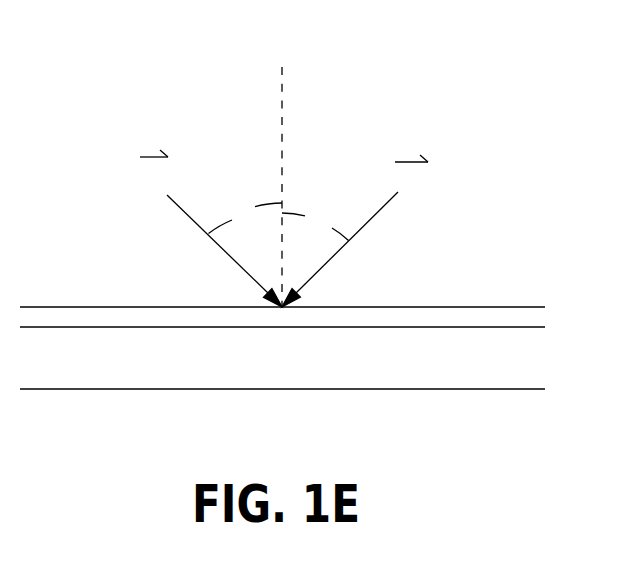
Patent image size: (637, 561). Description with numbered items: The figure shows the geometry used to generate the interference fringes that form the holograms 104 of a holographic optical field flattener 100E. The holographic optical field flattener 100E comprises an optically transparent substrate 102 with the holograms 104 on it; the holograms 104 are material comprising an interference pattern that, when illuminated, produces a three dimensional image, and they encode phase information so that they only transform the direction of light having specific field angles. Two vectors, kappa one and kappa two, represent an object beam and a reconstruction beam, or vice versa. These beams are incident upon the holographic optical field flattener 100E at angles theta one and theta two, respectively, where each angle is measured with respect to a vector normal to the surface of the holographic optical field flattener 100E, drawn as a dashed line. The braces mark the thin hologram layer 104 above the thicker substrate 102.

The holographic optical field flattener 100E is at (298, 40).
The holograms 104 is at (573, 307).
The optically transparent substrate 102 is at (573, 329).